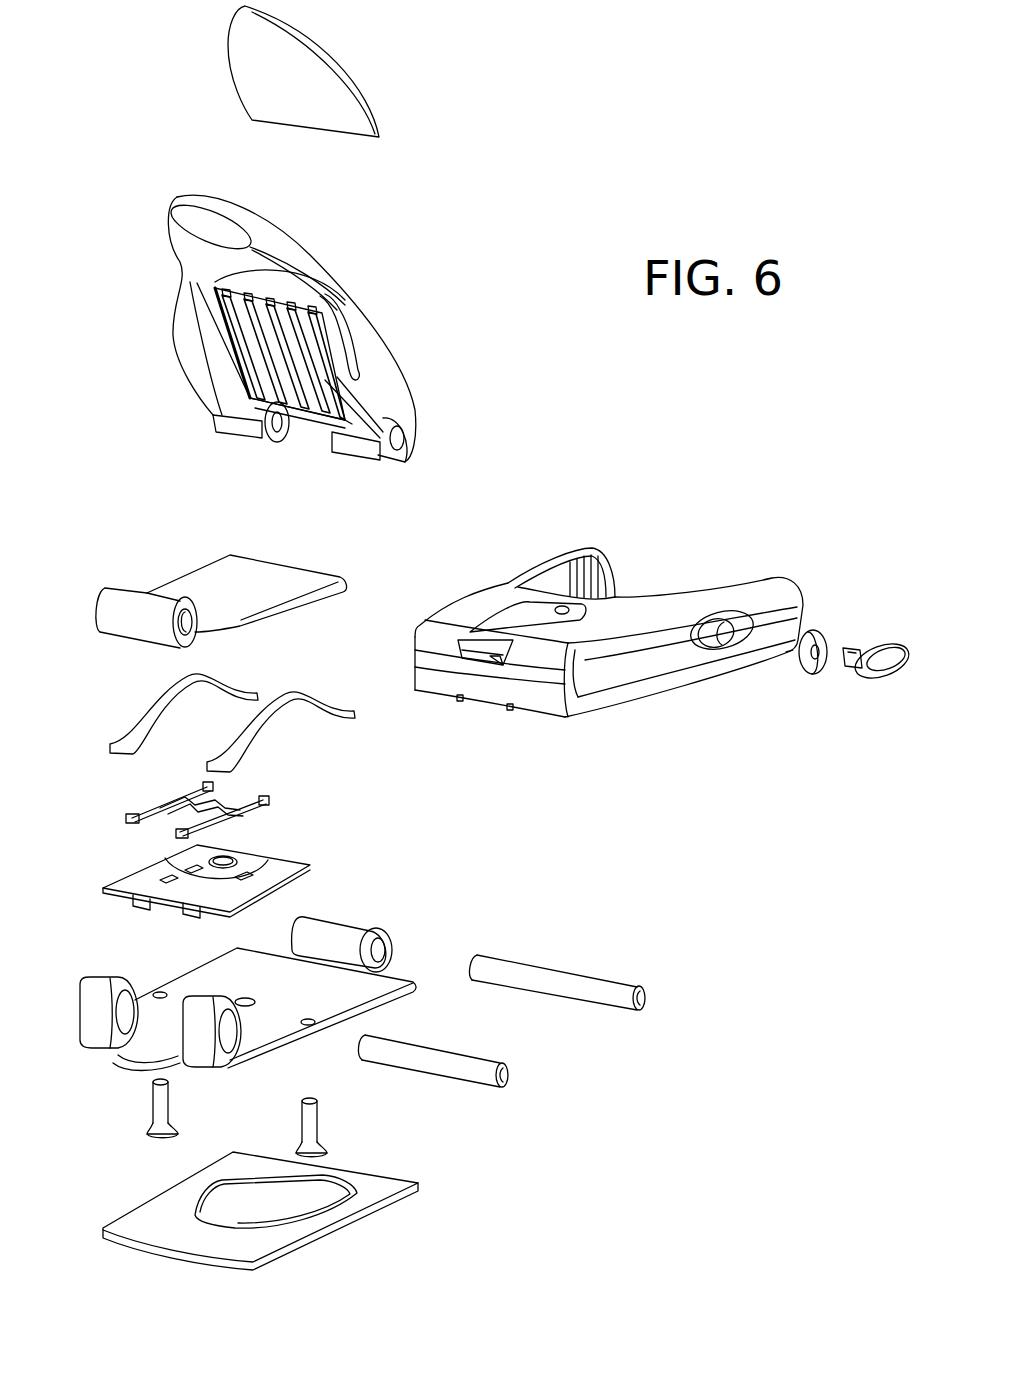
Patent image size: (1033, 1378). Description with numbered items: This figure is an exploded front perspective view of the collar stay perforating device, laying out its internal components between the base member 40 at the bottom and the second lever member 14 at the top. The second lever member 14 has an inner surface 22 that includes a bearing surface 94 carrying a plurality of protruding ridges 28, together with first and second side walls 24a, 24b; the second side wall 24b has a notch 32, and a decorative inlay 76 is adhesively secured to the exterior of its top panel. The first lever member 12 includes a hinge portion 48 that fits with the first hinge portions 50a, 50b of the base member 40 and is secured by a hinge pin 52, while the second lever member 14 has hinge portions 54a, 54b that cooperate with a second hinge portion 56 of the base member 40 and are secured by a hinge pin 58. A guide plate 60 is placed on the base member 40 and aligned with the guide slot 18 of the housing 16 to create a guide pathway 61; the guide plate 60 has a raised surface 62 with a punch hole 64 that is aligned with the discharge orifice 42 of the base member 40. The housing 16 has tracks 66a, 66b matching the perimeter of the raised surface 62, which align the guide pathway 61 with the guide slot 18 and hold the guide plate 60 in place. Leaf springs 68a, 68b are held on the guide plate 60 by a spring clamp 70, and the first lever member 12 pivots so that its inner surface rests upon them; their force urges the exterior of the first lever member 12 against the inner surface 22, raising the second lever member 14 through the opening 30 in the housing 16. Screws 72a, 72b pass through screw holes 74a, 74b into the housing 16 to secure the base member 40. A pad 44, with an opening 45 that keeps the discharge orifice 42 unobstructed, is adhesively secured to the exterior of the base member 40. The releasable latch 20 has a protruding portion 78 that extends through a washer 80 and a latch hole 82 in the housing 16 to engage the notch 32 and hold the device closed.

The first lever member 12 is at (221, 596).
The second lever member 14 is at (294, 352).
The housing 16 is at (633, 690).
The guide slot 18 is at (140, 1060).
The releasable latch 20 is at (890, 665).
The inner surface 22 is at (262, 287).
The first side wall 24a is at (202, 355).
The second side wall 24b is at (360, 408).
The protruding ridges 28 is at (208, 280).
The opening 30 is at (592, 642).
The notch 32 is at (360, 375).
The base member 40 is at (250, 999).
The discharge orifice 42 is at (255, 998).
The pad 44 is at (286, 1208).
The opening 45 is at (272, 1202).
The hinge portion 48 is at (123, 617).
The first hinge portion 50a is at (93, 1022).
The first hinge portion 50b is at (200, 1048).
The hinge pin 52 is at (513, 1075).
The hinge portion 54a is at (232, 422).
The hinge portion 54b is at (356, 447).
The second hinge portion 56 is at (347, 937).
The hinge pin 58 is at (655, 1001).
The guide plate 60 is at (209, 882).
The guide pathway 61 is at (140, 913).
The raised surface 62 is at (165, 880).
The punch hole 64 is at (234, 857).
The track 66a is at (458, 702).
The track 66b is at (510, 710).
The leaf spring 68a is at (160, 720).
The leaf spring 68b is at (265, 722).
The spring clamp 70 is at (178, 800).
The screw 72a is at (150, 1108).
The screw 72b is at (320, 1120).
The screw hole 74a is at (158, 990).
The screw hole 74b is at (310, 1027).
The decorative inlay 76 is at (330, 115).
The protruding portion 78 is at (855, 640).
The washer 80 is at (815, 627).
The latch hole 82 is at (720, 632).
The bearing surface 94 is at (212, 333).